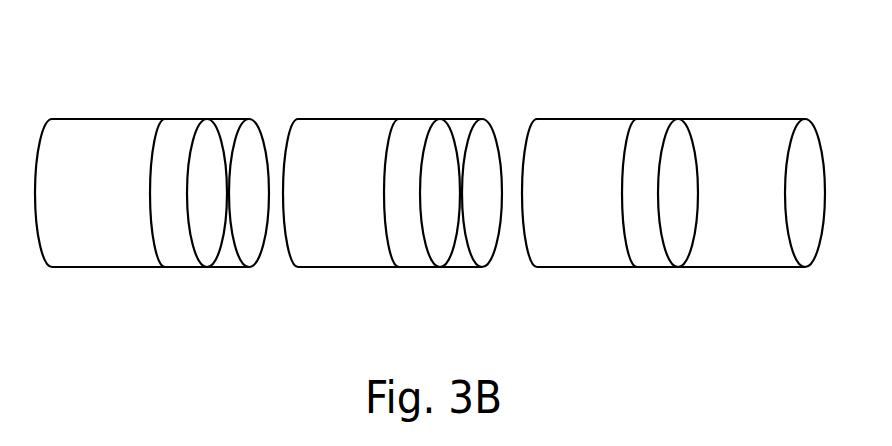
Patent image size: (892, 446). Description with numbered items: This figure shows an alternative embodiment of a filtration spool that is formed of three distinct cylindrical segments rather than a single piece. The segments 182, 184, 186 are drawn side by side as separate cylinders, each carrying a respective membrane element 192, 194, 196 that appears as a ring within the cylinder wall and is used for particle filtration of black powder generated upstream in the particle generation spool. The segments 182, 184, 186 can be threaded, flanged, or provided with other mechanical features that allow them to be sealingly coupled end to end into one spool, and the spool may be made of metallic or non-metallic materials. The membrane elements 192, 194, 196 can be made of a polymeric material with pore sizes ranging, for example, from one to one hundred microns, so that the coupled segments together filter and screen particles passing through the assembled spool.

The segment 182 is at (152, 145).
The segment 184 is at (392, 145).
The segment 186 is at (673, 145).
The membrane element 192 is at (183, 119).
The membrane element 194 is at (415, 119).
The membrane element 196 is at (655, 119).